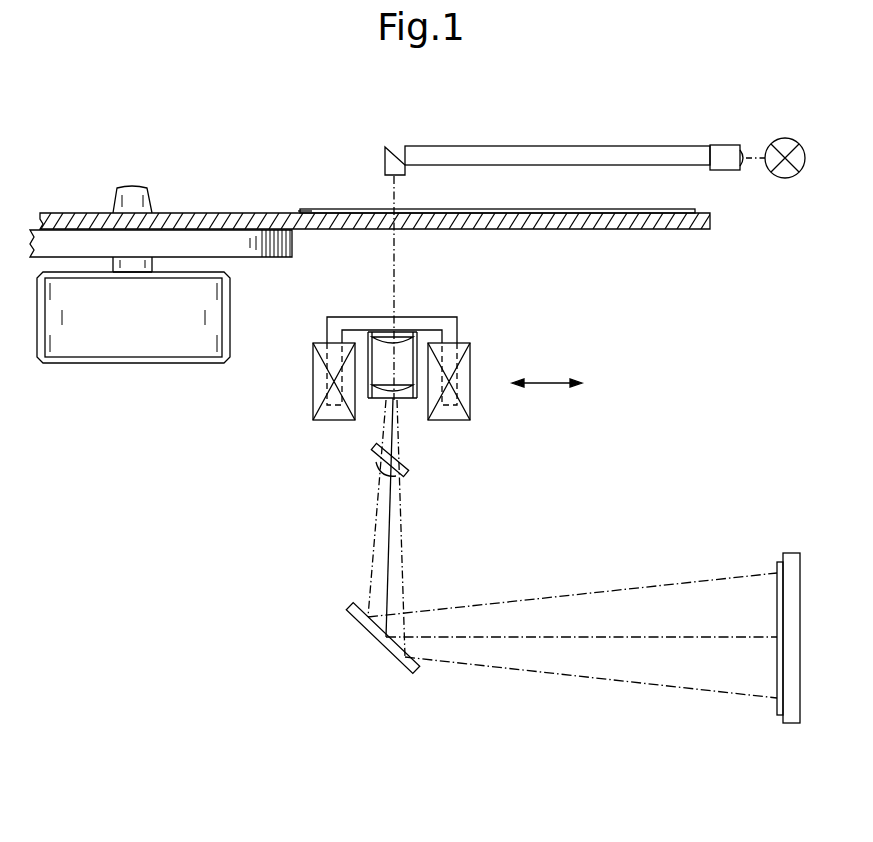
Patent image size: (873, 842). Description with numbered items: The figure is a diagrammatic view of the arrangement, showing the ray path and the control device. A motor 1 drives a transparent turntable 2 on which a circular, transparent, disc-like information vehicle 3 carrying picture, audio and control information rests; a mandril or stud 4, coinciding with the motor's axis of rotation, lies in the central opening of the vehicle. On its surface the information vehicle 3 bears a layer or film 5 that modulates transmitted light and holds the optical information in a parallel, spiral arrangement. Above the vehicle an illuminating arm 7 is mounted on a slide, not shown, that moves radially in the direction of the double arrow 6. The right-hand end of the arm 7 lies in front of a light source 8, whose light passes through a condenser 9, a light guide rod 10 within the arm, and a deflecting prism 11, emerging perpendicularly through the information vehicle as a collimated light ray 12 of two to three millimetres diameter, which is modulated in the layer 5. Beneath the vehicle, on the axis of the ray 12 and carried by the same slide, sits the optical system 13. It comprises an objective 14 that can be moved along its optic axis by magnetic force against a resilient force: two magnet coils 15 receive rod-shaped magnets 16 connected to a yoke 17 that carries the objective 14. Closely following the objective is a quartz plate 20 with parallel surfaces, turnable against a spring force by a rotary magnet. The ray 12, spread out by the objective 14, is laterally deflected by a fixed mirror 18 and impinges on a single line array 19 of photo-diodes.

The motor 1 is at (132, 350).
The transparent turntable 2 is at (223, 212).
The information vehicle 3 is at (303, 210).
The mandril or stud 4 is at (131, 185).
The layer or film 5 is at (342, 209).
The double arrow 6 is at (547, 382).
The illuminating arm 7 is at (557, 122).
The light source 8 is at (778, 139).
The condenser 9 is at (723, 144).
The light guide rod 10 is at (598, 146).
The deflecting prism 11 is at (390, 146).
The light ray or beam 12 is at (395, 258).
The optical system 13 is at (320, 448).
The objective 14 is at (401, 398).
The magnet coils 15 is at (313, 358).
The rod-shaped magnets 16 is at (330, 417).
The yoke 17 is at (410, 318).
The fixed mirror 18 is at (378, 640).
The single line array of photo-diodes 19 is at (777, 615).
The quartz plate 20 is at (405, 470).